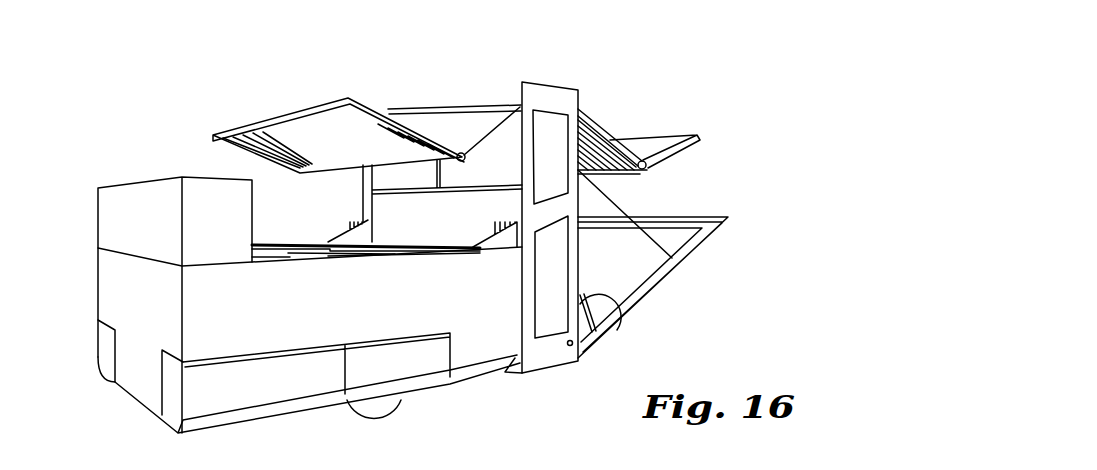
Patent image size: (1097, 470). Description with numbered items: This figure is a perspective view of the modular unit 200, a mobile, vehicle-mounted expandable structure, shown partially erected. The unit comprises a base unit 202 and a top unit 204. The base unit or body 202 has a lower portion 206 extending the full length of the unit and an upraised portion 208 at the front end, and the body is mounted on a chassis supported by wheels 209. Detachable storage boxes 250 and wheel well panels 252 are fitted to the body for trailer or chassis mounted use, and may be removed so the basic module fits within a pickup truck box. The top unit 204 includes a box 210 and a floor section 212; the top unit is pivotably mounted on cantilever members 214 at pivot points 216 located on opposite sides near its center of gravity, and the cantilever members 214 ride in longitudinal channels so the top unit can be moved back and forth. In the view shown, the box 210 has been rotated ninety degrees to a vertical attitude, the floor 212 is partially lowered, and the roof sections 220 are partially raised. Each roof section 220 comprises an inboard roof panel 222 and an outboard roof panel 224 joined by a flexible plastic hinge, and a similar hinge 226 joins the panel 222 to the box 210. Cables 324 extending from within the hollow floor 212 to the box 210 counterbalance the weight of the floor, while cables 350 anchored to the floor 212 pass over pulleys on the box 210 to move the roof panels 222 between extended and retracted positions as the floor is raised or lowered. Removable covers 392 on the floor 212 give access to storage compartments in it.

The modular unit 200 is at (830, 31).
The base unit 202 is at (272, 389).
The top unit 204 is at (487, 189).
The lower portion 206 is at (110, 293).
The upraised portion 208 is at (108, 200).
The wheels 209 is at (387, 414).
The box 210 is at (570, 84).
The floor section 212 is at (693, 257).
The cantilever members 214 is at (355, 227).
The pivot points 216 is at (556, 218).
The roof sections 220 is at (487, 101).
The inboard roof panel 222 is at (461, 130).
The outboard roof panel 224 is at (303, 108).
The hinge 226 is at (482, 112).
The detachable storage boxes 250 is at (107, 348).
The wheel well panels 252 is at (422, 362).
The cables 324 is at (616, 191).
The cables 350 is at (606, 316).
The removable covers 392 is at (676, 229).